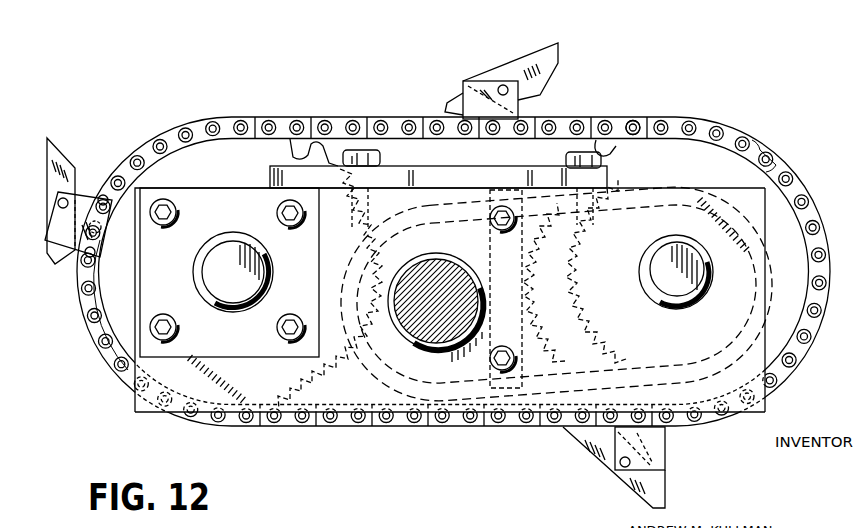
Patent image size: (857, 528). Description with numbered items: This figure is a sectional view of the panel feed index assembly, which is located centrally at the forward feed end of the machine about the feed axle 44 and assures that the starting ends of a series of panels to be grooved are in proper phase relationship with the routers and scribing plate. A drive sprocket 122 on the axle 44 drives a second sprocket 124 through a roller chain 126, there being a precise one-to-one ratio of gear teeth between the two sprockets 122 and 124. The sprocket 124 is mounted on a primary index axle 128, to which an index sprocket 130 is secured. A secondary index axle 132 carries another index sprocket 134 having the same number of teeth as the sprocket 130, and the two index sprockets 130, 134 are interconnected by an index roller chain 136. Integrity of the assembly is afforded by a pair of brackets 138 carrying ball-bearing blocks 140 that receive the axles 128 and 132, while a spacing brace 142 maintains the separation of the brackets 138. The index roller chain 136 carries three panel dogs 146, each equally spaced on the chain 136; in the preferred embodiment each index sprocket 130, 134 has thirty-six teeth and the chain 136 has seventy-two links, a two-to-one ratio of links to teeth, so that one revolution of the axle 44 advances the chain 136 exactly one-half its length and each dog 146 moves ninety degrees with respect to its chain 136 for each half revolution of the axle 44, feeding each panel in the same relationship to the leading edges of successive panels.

The axle 44 is at (427, 292).
The drive sprocket 122 is at (468, 428).
The sprocket 124 is at (707, 177).
The roller chain 126 is at (648, 175).
The primary index axle 128 is at (672, 270).
The index sprocket 130 is at (783, 218).
The secondary index axle 132 is at (212, 270).
The index sprocket 134 is at (118, 321).
The index roller chain 136 is at (253, 125).
The brackets 138 is at (260, 384).
The ball-bearing blocks 140 is at (217, 207).
The spacing brace 142 is at (460, 185).
The panel dogs 146 is at (68, 168).